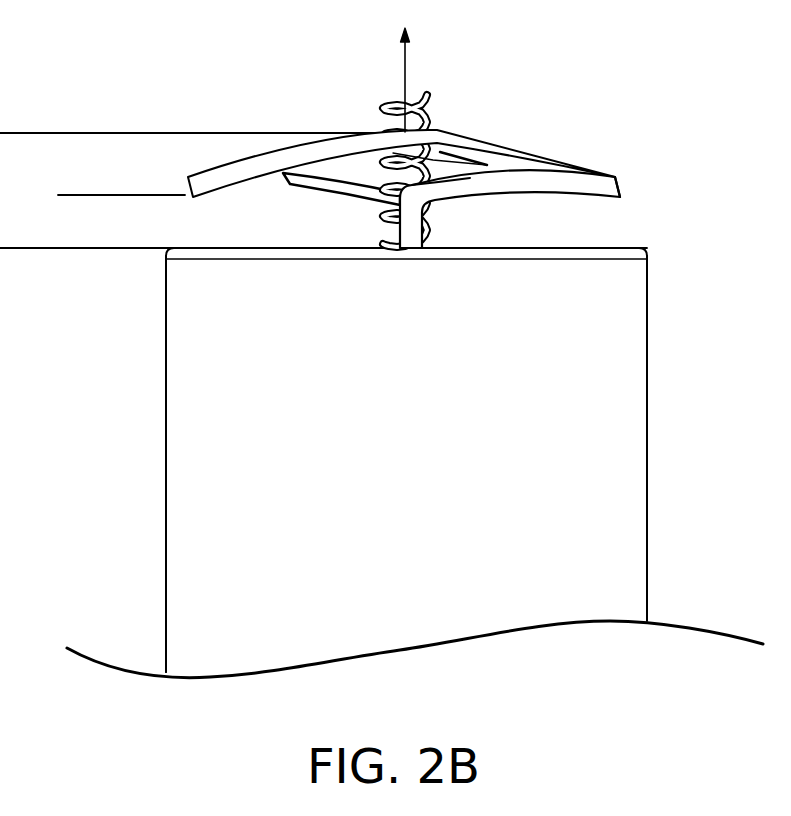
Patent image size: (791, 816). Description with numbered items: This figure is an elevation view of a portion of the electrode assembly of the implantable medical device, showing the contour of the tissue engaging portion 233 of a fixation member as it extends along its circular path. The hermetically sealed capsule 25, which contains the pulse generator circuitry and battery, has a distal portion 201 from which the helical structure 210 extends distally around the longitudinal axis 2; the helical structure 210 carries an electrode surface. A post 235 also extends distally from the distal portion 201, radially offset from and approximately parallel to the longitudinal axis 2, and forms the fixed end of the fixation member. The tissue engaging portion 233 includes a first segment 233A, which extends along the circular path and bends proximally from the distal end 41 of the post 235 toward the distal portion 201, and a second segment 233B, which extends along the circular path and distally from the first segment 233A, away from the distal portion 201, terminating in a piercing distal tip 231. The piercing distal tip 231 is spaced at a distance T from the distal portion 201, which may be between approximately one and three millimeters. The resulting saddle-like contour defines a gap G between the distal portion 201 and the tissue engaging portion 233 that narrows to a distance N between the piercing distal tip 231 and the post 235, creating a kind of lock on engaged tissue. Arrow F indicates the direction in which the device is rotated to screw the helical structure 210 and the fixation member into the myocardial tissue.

The longitudinal axis 2 is at (405, 77).
The hermetically sealed capsule 25 is at (421, 443).
The distal end of post 41 is at (428, 188).
The distal portion 201 is at (126, 299).
The helical structure 210 is at (376, 206).
The piercing distal tip 231 is at (433, 130).
The tissue engaging portion 233 is at (170, 178).
The first segment 233A is at (630, 188).
The second segment 233B is at (293, 163).
The post 235 is at (415, 230).
The gap G is at (243, 209).
The distance T is at (17, 133).
The distance N is at (70, 150).
The arrow F is at (605, 225).